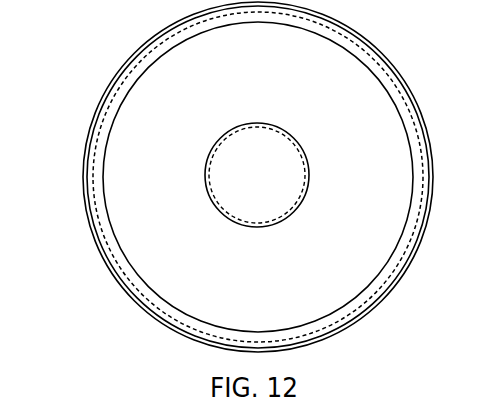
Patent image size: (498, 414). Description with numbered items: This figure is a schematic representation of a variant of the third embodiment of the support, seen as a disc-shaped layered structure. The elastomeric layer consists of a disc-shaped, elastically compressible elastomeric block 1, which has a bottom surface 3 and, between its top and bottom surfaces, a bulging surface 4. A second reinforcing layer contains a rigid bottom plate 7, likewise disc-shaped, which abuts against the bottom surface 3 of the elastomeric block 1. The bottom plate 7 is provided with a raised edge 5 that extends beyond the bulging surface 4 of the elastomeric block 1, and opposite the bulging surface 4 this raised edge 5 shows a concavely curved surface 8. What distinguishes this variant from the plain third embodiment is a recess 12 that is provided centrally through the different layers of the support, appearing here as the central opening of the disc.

The elastomeric block 1 is at (226, 177).
The bottom surface 3 is at (347, 246).
The bulging surface 4 is at (104, 212).
The raised edge 5 is at (99, 243).
The bottom plate 7 is at (83, 159).
The concavely curved surface 8 is at (106, 118).
The recess 12 is at (228, 161).